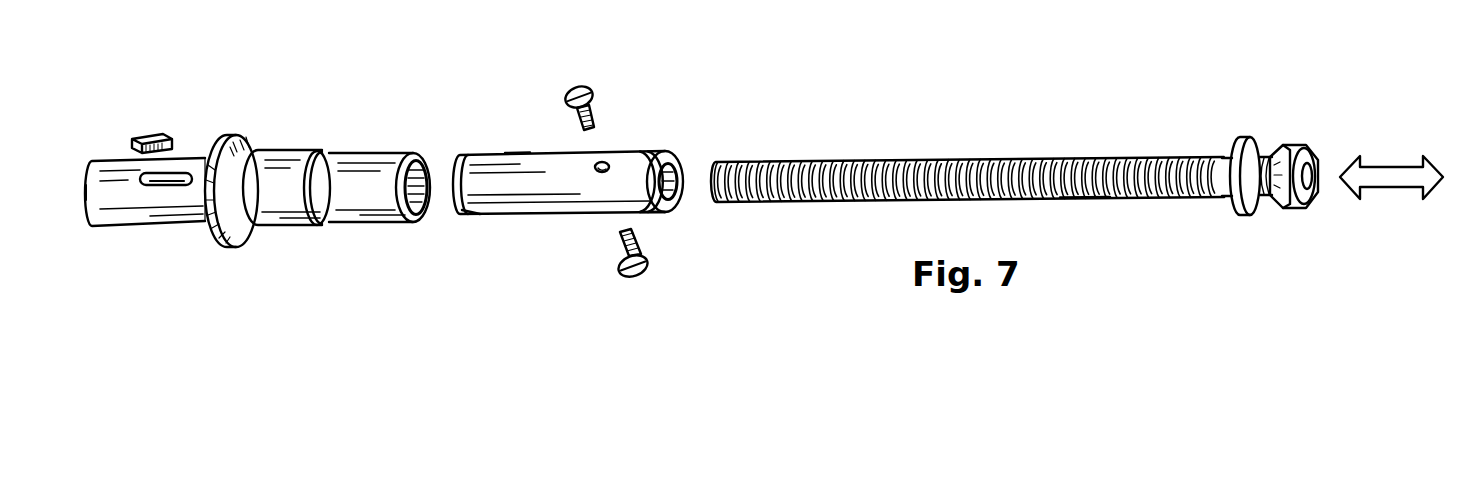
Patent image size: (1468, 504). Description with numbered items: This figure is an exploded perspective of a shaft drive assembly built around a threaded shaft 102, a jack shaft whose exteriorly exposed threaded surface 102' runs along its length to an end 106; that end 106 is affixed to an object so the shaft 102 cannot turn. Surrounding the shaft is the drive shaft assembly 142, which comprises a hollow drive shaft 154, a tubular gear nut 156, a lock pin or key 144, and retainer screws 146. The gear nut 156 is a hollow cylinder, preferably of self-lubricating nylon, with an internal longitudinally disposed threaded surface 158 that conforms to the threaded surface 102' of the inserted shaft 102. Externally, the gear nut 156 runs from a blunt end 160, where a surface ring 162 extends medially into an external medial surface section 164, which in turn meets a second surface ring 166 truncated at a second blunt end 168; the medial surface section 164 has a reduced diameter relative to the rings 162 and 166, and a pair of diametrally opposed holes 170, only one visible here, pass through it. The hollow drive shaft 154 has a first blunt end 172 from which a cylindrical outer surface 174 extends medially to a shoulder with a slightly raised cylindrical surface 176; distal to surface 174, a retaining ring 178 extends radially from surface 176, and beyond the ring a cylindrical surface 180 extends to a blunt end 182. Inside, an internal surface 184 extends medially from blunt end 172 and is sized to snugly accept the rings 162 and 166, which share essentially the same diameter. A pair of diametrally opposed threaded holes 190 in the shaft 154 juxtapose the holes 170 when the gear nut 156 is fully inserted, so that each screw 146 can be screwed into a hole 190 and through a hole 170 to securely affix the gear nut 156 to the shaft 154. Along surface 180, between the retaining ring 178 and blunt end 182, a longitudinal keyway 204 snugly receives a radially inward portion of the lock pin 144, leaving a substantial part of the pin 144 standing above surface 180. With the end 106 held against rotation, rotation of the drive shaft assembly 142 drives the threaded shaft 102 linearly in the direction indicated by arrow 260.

The threaded shaft 102 is at (967, 183).
The threaded surface 102' is at (1111, 229).
The end 106 is at (1293, 150).
The drive shaft assembly 142 is at (498, 74).
The lock pin 144 is at (157, 131).
The retainer screws 146 is at (590, 97).
The hollow drive shaft 154 is at (282, 151).
The tubular gear nut 156 is at (548, 215).
The threaded surface 158 is at (686, 183).
The blunt end 160 is at (681, 155).
The surface ring 162 is at (664, 214).
The medial surface section 164 is at (514, 152).
The second surface ring 166 is at (459, 216).
The second blunt end 168 is at (455, 155).
The holes 170 is at (603, 162).
The first blunt end 172 is at (386, 152).
The cylindrical outer surface 174 is at (370, 222).
The raised cylindrical surface 176 is at (282, 228).
The retaining ring 178 is at (230, 137).
The cylindrical surface 180 is at (143, 228).
The blunt end 182 is at (86, 203).
The internal surface 184 is at (432, 222).
The holes 190 is at (330, 155).
The keyway 204 is at (180, 157).
The arrow 260 is at (1390, 188).